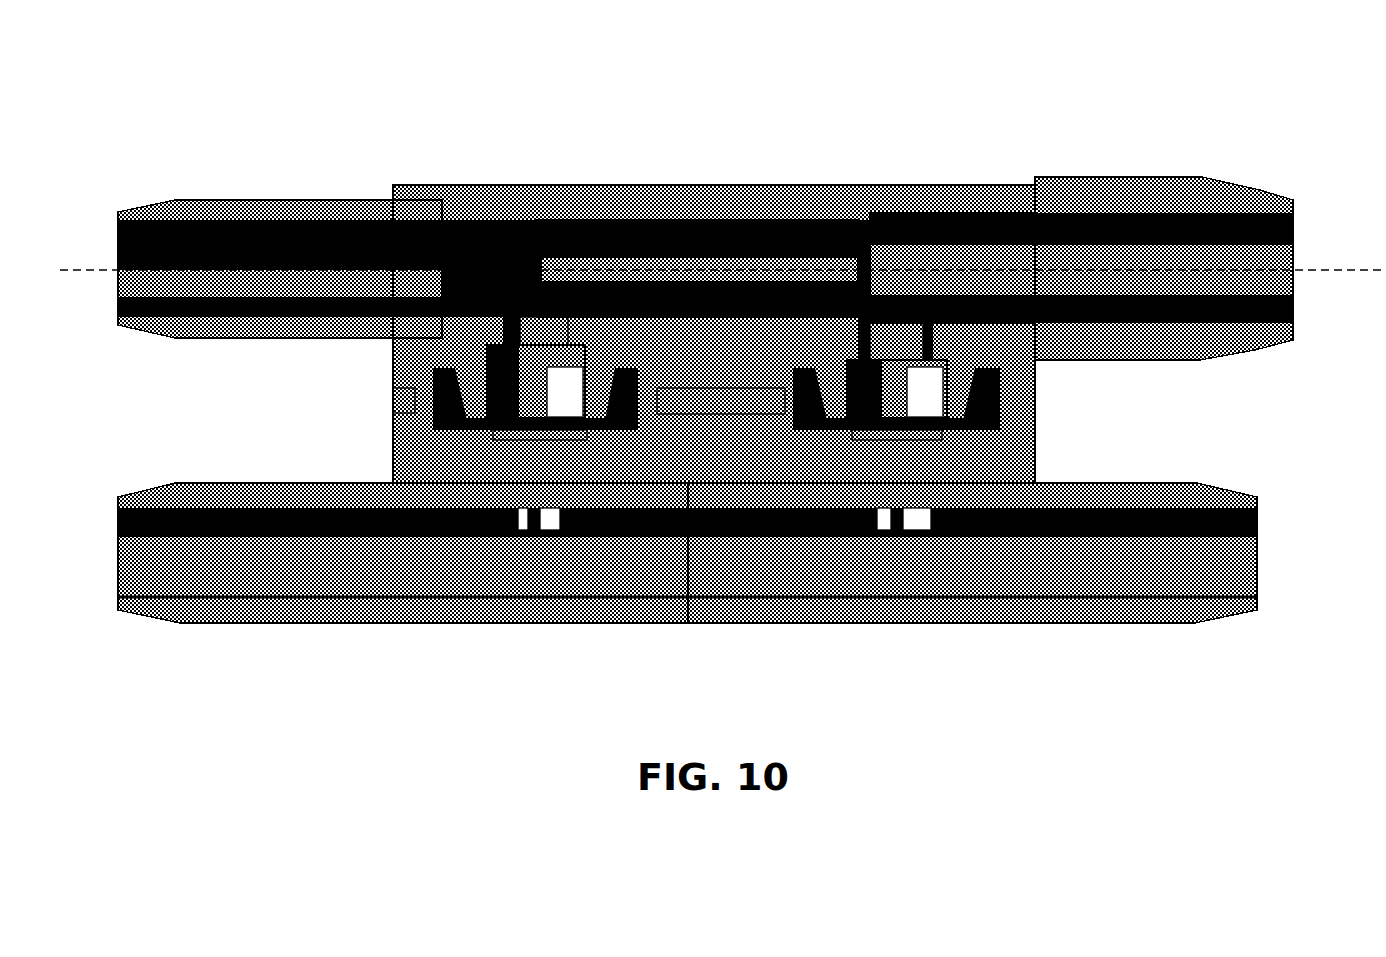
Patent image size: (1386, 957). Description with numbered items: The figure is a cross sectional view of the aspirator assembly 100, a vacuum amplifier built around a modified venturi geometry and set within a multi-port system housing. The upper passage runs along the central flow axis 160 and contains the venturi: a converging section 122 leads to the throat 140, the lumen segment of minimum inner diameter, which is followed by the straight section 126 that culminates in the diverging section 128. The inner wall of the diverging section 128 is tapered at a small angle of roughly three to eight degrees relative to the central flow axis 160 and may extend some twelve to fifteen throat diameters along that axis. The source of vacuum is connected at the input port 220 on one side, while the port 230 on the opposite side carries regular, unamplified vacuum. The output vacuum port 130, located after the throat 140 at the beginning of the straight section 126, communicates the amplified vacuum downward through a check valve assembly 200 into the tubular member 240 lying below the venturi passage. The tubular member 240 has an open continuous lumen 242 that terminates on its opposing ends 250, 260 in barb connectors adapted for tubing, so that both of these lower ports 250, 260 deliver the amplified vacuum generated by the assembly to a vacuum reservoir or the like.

The aspirator assembly 100 is at (952, 118).
The converging section 122 is at (515, 270).
The straight section 126 is at (555, 275).
The diverging section 128 is at (650, 270).
The output vacuum port 130 is at (525, 290).
The throat 140 is at (530, 275).
The central flow axis 160 is at (95, 265).
The check valve assembly 200 is at (520, 368).
The input port 220 is at (1268, 230).
The port 230 is at (118, 222).
The tubular member 240 is at (525, 578).
The open continuous lumen 242 is at (712, 568).
The opposing end 250 is at (118, 543).
The opposing end 260 is at (1247, 538).